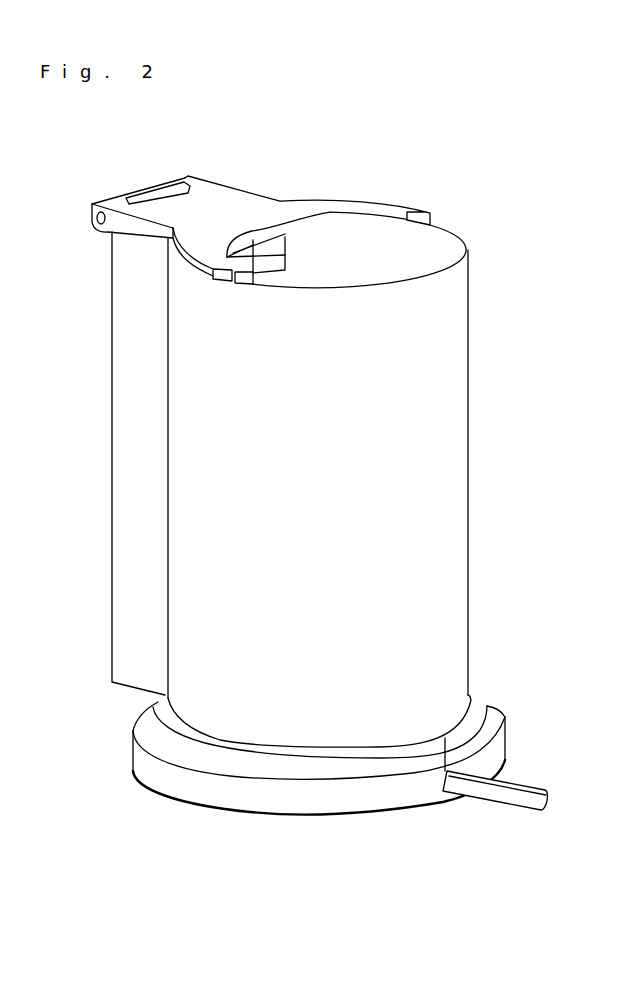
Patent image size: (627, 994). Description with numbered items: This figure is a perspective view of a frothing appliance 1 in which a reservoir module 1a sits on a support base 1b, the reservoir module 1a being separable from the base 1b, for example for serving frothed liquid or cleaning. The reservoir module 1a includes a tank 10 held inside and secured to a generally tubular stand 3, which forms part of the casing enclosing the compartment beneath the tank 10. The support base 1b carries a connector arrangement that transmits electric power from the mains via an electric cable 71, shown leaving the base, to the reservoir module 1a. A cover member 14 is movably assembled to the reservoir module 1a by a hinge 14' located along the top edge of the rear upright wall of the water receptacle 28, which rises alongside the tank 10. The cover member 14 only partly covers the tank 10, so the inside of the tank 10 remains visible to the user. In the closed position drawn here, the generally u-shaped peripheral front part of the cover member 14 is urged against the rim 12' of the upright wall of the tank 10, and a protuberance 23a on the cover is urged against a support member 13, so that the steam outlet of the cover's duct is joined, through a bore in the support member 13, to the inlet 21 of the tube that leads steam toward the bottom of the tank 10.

The appliance 1 is at (462, 130).
The reservoir module 1a is at (533, 333).
The support base 1b is at (533, 750).
The tubular stand 3 is at (318, 446).
The tank 10 is at (425, 247).
The cover member 14 is at (232, 204).
The hinge 14' is at (70, 232).
The protuberance 23a is at (268, 242).
The support member 13 is at (277, 258).
The inlet 21 is at (262, 278).
The rim 12' is at (232, 281).
The water receptacle 28 is at (128, 410).
The electric cable 71 is at (538, 800).